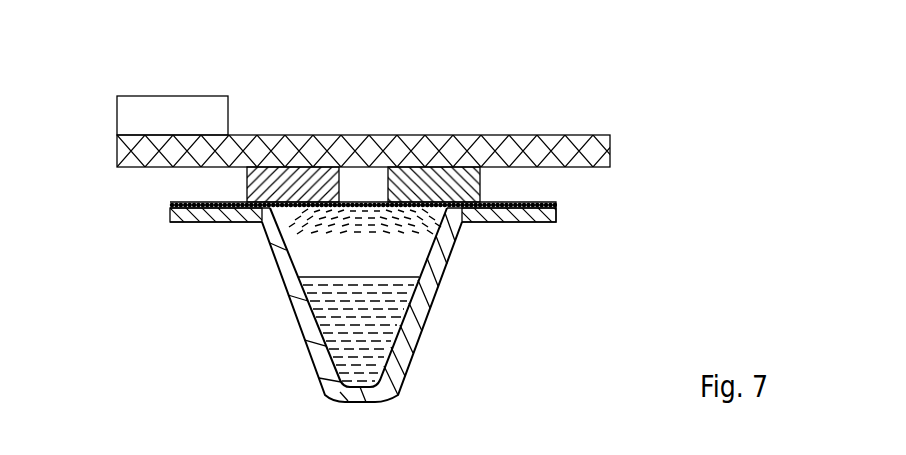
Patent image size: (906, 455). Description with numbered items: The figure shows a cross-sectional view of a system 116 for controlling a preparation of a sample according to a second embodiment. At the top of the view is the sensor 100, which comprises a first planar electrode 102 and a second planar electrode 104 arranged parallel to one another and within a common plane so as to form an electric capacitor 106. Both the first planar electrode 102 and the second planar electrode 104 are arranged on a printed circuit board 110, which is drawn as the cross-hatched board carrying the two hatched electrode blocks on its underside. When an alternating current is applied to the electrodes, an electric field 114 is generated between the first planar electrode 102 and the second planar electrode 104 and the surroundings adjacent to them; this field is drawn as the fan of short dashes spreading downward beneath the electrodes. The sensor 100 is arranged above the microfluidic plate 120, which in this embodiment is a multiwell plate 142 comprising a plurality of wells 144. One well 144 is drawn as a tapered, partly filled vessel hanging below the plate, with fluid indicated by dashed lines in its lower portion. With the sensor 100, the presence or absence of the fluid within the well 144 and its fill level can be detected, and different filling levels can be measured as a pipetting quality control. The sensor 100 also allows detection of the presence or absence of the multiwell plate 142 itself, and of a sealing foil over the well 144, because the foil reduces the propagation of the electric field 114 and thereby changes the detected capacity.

The sensor 100 is at (637, 166).
The first planar electrode 102 is at (467, 183).
The second planar electrode 104 is at (260, 187).
The electric capacitor 106 is at (290, 217).
The printed circuit board 110 is at (128, 150).
The electric field 114 is at (322, 226).
The system for controlling a preparation of a sample 116 is at (675, 135).
The microfluidic plate 120 is at (543, 225).
The multiwell plate 142 is at (362, 305).
The well 144 is at (428, 292).